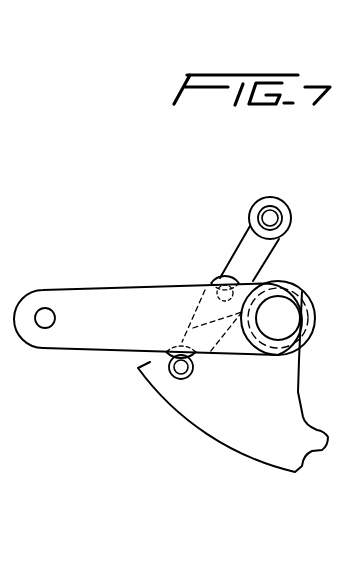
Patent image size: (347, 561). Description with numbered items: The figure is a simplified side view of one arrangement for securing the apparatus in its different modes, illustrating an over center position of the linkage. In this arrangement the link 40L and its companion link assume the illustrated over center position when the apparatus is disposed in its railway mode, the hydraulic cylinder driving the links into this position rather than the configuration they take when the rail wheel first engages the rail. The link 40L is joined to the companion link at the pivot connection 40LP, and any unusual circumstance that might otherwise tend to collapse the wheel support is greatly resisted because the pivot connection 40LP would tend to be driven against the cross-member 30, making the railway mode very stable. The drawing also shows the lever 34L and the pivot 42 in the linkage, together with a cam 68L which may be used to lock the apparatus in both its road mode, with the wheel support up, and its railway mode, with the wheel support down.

The cross-member 30 is at (298, 282).
The left lever arm 34L is at (97, 289).
The link 40L is at (246, 223).
The pivot connection 40LP is at (223, 276).
The pivot pin 42 is at (142, 338).
The cam 68L is at (197, 430).